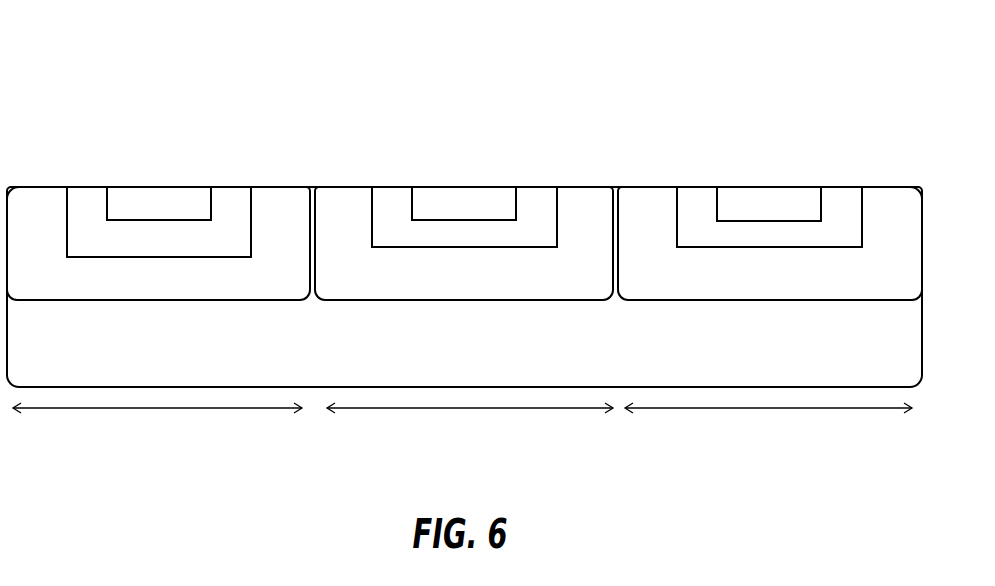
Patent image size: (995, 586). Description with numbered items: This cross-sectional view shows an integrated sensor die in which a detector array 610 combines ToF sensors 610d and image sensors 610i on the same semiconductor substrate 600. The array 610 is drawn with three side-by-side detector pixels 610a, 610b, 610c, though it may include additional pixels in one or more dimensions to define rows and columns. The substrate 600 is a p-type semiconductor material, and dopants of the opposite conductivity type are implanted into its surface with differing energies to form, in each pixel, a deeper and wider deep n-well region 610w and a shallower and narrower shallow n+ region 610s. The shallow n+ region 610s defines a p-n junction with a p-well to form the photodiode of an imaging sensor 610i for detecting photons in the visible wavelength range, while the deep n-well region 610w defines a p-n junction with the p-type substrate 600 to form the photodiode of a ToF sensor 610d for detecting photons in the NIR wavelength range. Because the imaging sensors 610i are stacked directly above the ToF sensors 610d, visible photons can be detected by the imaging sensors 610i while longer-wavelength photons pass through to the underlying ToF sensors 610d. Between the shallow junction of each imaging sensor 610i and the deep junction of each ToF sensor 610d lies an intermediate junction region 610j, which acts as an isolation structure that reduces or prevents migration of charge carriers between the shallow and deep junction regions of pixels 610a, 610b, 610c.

The semiconductor substrate 600 is at (476, 375).
The detector array 610 is at (94, 38).
The detector pixel 610a is at (135, 461).
The detector pixel 610b is at (447, 461).
The detector pixel 610c is at (761, 459).
The deep n-well region 610w is at (220, 286).
The intermediate junction region 610j is at (95, 258).
The shallow n+ region 610s is at (750, 203).
The imaging sensor 610i is at (865, 133).
The ToF sensor 610d is at (285, 302).